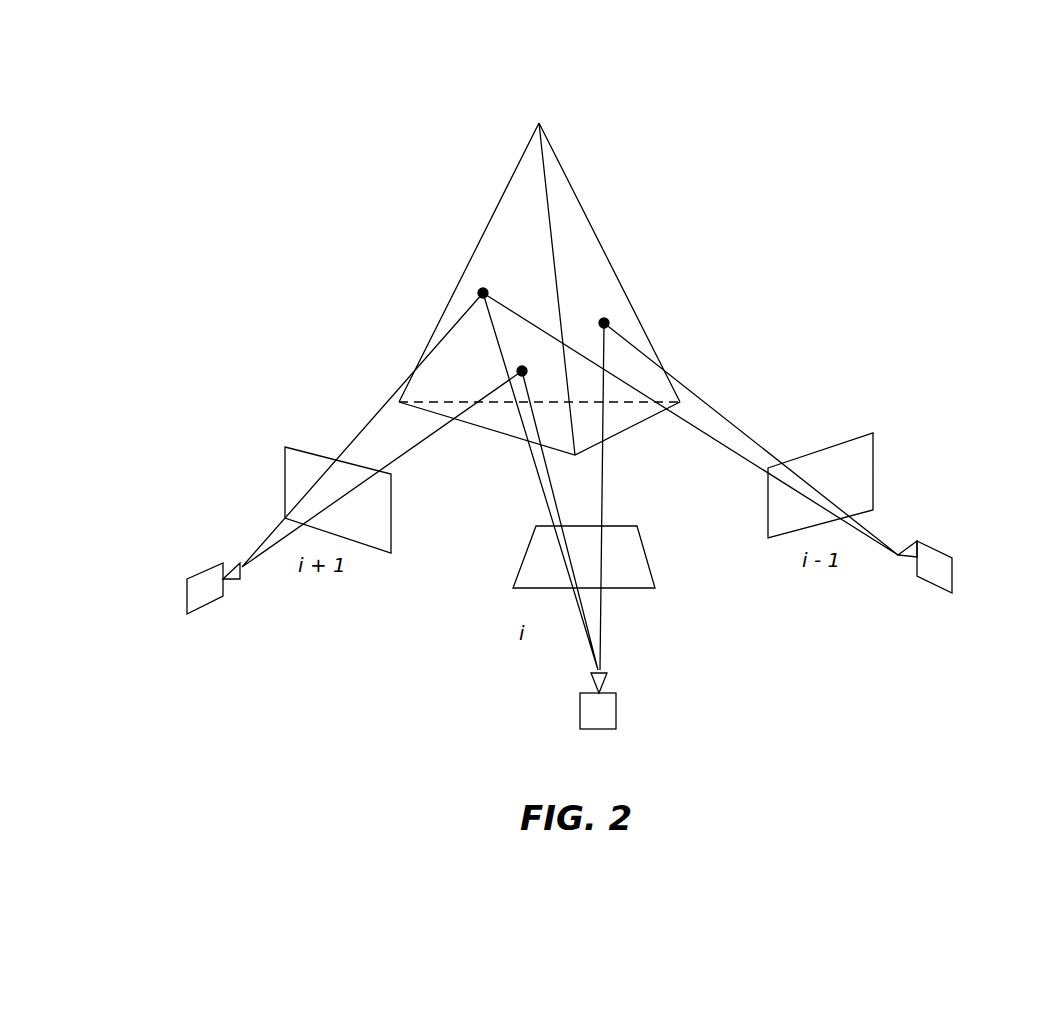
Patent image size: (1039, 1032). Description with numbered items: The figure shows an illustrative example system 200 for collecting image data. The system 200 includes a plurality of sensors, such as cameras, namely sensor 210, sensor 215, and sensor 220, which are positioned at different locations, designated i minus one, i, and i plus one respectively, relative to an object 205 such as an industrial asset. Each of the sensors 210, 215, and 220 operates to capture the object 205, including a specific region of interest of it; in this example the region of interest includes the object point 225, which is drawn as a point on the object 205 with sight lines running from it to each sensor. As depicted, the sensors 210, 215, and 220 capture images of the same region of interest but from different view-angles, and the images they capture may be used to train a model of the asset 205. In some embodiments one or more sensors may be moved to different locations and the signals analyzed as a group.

The system 200 is at (216, 138).
The object 205 is at (608, 206).
The sensor 210 is at (206, 545).
The sensor 215 is at (540, 711).
The sensor 220 is at (942, 530).
The object point 225 is at (482, 268).